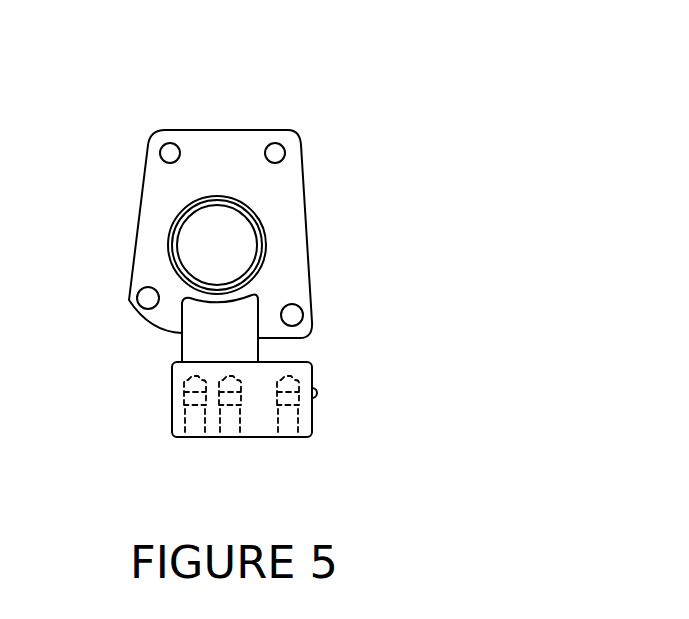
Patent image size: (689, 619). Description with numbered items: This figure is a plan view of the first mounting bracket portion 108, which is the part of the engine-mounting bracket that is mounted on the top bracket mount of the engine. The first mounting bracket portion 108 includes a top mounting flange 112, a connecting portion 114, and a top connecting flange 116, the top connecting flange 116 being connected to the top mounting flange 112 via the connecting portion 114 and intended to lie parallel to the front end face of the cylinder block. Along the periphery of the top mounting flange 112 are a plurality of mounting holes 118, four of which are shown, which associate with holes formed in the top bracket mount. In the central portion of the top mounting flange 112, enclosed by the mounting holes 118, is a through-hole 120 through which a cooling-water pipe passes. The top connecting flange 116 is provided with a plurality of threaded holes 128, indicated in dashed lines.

The first mounting bracket portion 108 is at (390, 90).
The top mounting flange 112 is at (297, 203).
The connecting portion 114 is at (195, 345).
The top connecting flange 116 is at (316, 402).
The mounting holes 118 is at (167, 150).
The through-hole 120 is at (186, 214).
The threaded holes 128 is at (220, 410).